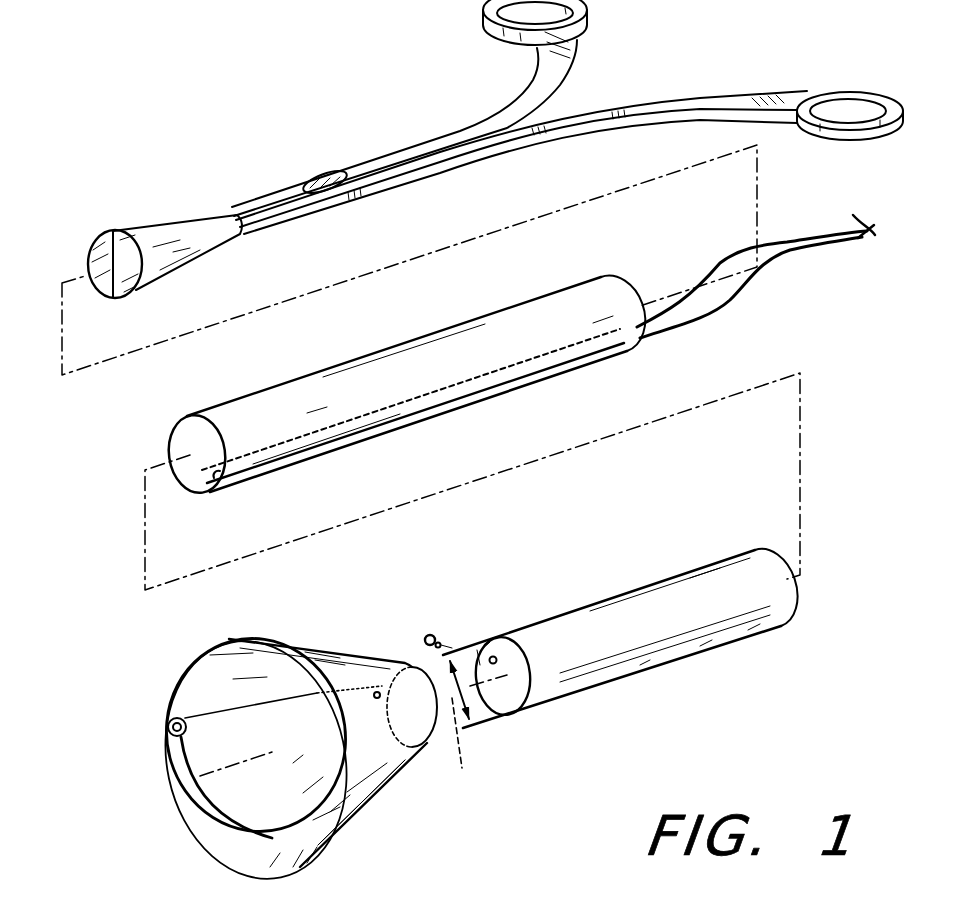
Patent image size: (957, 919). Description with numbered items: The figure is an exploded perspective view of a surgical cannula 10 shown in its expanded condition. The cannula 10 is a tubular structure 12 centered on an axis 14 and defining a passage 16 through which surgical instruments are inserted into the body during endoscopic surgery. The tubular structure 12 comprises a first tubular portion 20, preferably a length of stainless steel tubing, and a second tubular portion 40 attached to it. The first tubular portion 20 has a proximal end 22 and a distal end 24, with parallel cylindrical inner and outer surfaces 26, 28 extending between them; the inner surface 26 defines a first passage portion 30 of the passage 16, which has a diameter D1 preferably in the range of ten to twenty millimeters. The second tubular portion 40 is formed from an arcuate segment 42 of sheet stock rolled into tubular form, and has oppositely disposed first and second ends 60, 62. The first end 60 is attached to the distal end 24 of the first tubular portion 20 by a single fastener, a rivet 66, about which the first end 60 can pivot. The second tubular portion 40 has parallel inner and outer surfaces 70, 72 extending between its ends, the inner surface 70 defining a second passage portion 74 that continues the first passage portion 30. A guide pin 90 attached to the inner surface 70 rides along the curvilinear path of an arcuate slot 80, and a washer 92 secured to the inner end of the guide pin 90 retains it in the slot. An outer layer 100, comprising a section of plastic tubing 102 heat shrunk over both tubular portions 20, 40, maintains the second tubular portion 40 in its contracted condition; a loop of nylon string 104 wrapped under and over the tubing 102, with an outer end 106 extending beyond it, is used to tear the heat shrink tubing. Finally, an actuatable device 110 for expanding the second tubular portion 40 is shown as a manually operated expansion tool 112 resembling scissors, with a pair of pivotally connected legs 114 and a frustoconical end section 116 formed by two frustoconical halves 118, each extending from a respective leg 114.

The cannula 10 is at (131, 446).
The tubular structure 12 is at (401, 793).
The axis 14 is at (465, 770).
The passage 16 is at (513, 663).
The first tubular portion 20 is at (626, 648).
The proximal end 22 is at (778, 595).
The distal end 24 is at (485, 641).
The inner surface 26 is at (478, 645).
The outer surface 28 is at (612, 598).
The first passage portion 30 is at (513, 687).
The second tubular portion 40 is at (286, 766).
The arcuate segment 42 is at (310, 855).
The first end 60 is at (439, 718).
The second end 62 is at (228, 832).
The rivet 66 is at (428, 634).
The inner surface 70 is at (258, 853).
The outer surface 72 is at (363, 792).
The second passage portion 74 is at (263, 736).
The arcuate slot 80 is at (177, 772).
The guide pin 90 is at (183, 715).
The washer 92 is at (168, 712).
The outer layer 100 is at (412, 369).
The plastic tubing 102 is at (611, 298).
The nylon string 104 is at (712, 315).
The outer end 106 is at (803, 244).
The actuatable device 110 is at (495, 149).
The expansion tool 112 is at (407, 143).
The legs 114 is at (585, 30).
The frustoconical end section 116 is at (187, 267).
The frustoconical halves 118 is at (130, 253).
The diameter D1 is at (450, 688).